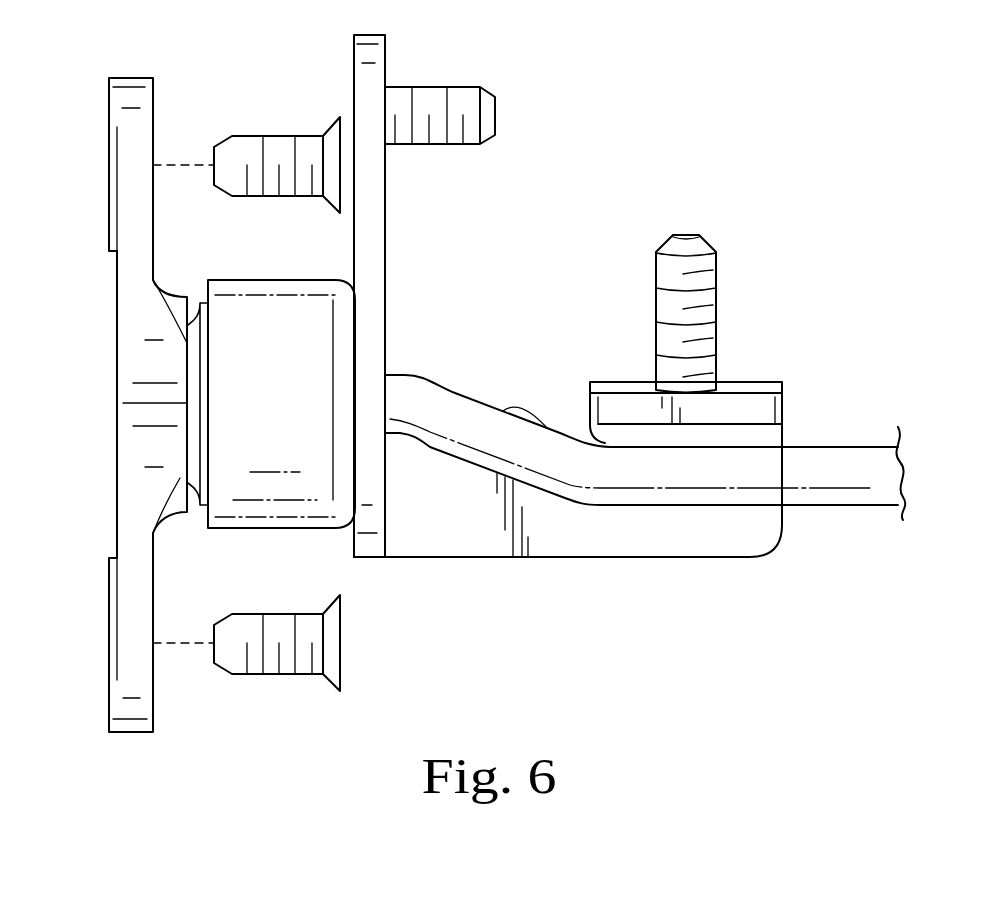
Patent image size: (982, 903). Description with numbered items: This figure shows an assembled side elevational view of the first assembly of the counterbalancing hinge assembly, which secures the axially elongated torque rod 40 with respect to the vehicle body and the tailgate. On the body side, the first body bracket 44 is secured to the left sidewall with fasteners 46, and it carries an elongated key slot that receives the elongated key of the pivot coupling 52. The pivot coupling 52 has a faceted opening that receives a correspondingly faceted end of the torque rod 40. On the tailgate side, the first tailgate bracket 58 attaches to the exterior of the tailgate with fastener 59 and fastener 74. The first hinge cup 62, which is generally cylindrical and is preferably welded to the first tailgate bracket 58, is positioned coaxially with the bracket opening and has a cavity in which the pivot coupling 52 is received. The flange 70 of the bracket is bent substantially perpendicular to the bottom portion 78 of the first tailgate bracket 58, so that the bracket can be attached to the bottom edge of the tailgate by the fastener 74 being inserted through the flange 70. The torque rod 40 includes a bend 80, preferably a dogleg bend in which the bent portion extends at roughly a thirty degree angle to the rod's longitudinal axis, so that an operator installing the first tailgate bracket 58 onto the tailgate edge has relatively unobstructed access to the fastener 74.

The torque rod 40 is at (827, 495).
The first body bracket 44 is at (133, 390).
The fasteners 46 is at (273, 137).
The pivot coupling 52 is at (200, 327).
The first tailgate bracket 58 is at (385, 53).
The fastener 59 is at (452, 142).
The first hinge cup 62 is at (273, 502).
The flange 70 is at (772, 412).
The fastener 74 is at (708, 298).
The bottom portion 78 is at (462, 533).
The bend 80 is at (590, 473).